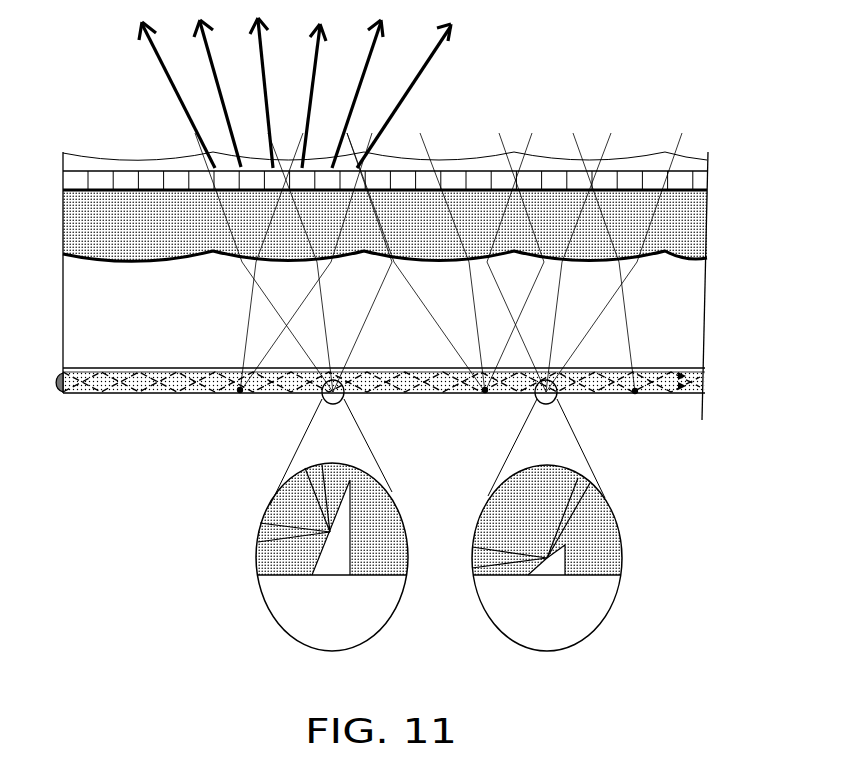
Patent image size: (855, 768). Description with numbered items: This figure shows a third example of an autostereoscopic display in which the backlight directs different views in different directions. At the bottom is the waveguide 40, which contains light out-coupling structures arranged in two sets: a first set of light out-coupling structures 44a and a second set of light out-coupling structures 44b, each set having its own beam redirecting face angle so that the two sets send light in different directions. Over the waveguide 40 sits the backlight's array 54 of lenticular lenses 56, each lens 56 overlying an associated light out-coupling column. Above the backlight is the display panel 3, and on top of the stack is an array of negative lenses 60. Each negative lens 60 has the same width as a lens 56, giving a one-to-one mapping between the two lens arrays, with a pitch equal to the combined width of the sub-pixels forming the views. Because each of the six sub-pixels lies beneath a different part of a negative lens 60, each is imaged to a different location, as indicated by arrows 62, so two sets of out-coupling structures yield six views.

The display panel 3 is at (163, 182).
The waveguide 40 is at (648, 405).
The light out-coupling structures of a first set 44a is at (238, 397).
The light out-coupling structures of a second set 44b is at (485, 392).
The array of lenticular lenses 54 is at (728, 229).
The lenticular lens 56 is at (618, 260).
The negative lens 60 is at (640, 160).
The arrows 62 is at (137, 62).